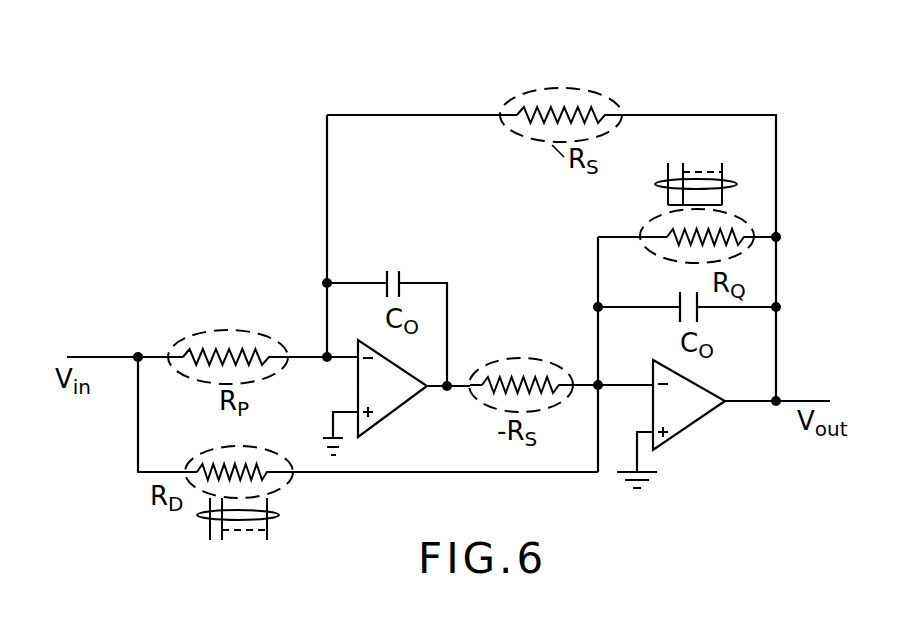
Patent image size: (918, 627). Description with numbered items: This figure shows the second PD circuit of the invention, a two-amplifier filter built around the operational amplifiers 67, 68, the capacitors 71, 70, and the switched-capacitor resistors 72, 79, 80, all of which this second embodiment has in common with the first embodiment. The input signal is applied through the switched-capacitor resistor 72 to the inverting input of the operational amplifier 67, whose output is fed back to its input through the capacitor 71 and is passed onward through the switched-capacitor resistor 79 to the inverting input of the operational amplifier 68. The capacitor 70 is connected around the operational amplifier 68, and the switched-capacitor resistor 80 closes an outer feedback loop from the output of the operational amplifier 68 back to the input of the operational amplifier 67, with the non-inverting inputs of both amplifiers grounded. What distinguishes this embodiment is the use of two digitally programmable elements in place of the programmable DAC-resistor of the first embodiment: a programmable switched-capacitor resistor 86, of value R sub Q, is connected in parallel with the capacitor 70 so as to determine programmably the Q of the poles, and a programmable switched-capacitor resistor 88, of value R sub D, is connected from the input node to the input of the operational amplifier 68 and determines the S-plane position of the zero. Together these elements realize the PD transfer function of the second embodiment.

The operational amplifier 67 is at (388, 397).
The operational amplifier 68 is at (686, 419).
The capacitor 70 is at (678, 296).
The capacitor 71 is at (390, 268).
The switched-capacitor resistor 72 is at (252, 328).
The switched-capacitor resistor 79 is at (543, 357).
The switched-capacitor resistor 80 is at (537, 88).
The programmable switched-capacitor resistor 86 is at (640, 218).
The programmable switched-capacitor resistor 88 is at (200, 446).